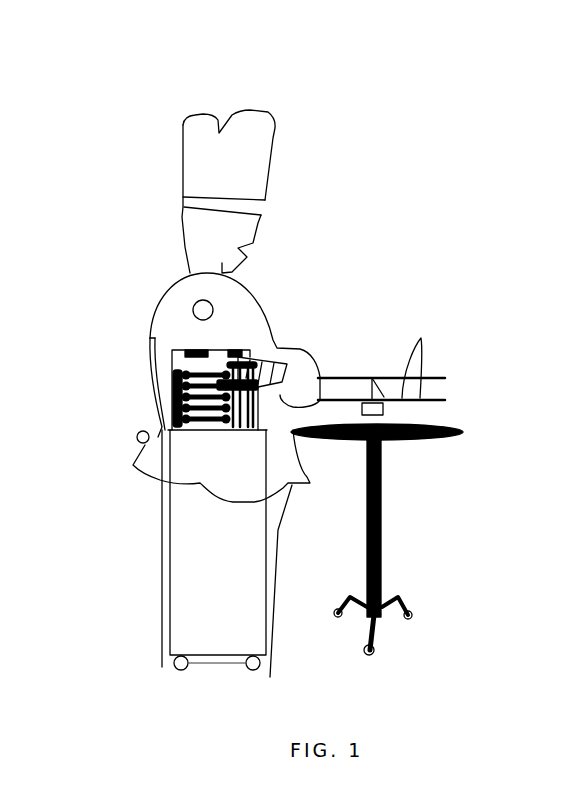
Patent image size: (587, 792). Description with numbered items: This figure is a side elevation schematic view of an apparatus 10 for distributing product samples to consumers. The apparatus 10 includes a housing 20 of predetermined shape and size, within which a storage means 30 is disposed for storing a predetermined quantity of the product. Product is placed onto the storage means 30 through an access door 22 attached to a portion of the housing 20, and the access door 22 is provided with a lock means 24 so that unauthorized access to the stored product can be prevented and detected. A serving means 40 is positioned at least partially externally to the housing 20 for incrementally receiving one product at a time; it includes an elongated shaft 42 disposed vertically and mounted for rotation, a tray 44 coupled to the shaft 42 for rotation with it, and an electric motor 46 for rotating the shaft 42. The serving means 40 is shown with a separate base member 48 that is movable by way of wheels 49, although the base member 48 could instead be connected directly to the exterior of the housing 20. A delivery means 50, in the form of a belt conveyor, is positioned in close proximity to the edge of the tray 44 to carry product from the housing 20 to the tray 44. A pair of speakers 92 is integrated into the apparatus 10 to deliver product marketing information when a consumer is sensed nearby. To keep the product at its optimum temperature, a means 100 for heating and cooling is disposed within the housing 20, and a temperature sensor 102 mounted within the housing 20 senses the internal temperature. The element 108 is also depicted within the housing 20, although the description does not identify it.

The apparatus 10 is at (158, 192).
The housing 20 is at (295, 497).
The access door 22 is at (155, 387).
The lock means 24 is at (138, 437).
The storage means 30 is at (143, 280).
The serving means 40 is at (478, 362).
The elongated shaft 42 is at (390, 377).
The tray 44 is at (428, 359).
The electric motor 46 is at (383, 410).
The base member 48 is at (382, 522).
The wheels 49 is at (375, 650).
The delivery means 50 is at (283, 340).
The speakers 92 is at (195, 302).
The means for heating and cooling 100 is at (193, 348).
The temperature sensor 102 is at (237, 350).
The coil stack 108 is at (162, 378).